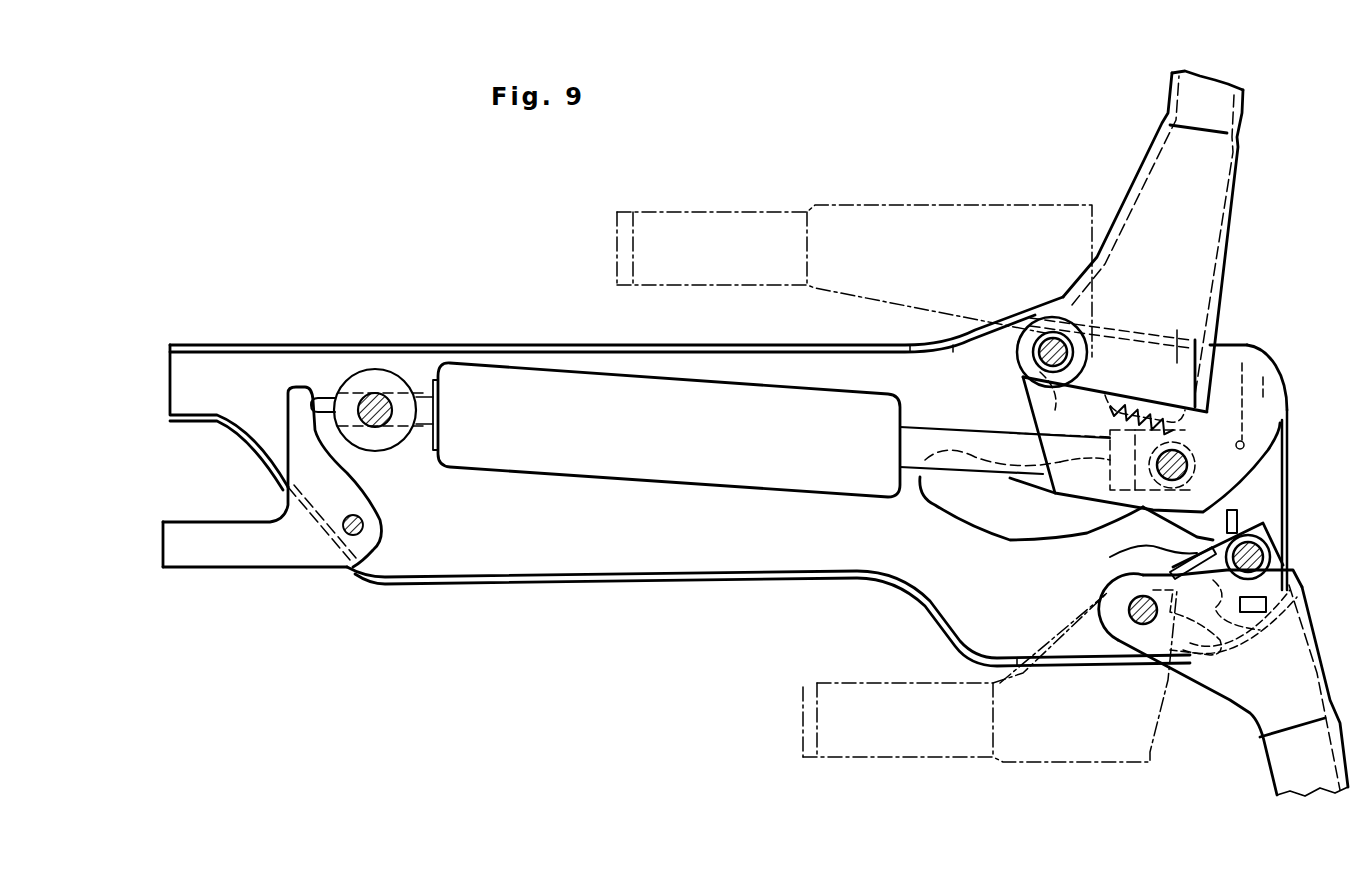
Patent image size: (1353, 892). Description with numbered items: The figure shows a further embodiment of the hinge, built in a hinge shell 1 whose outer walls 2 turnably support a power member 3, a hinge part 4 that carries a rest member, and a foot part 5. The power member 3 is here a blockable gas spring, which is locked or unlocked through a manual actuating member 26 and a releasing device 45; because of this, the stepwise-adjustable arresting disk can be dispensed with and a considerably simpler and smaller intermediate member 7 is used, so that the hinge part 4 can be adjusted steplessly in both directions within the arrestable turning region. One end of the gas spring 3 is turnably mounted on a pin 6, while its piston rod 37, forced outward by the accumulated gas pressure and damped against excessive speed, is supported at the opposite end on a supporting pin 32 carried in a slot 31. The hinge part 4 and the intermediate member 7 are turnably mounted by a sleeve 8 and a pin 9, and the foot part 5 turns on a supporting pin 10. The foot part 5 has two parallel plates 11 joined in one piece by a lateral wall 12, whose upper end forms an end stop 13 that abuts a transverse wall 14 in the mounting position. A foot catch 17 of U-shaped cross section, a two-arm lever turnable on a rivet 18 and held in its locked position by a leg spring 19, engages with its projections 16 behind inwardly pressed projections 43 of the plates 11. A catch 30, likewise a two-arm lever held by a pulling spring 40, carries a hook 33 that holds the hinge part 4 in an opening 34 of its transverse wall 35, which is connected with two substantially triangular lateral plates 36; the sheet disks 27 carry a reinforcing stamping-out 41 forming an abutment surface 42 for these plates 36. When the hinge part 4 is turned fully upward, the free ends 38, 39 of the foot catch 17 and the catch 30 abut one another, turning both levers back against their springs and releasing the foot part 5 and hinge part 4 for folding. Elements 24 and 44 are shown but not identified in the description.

The hinge shell 1 is at (700, 343).
The outer wall 2 is at (832, 362).
The power member 3 is at (513, 386).
The hinge part 4 is at (1218, 208).
The foot part 5 is at (1275, 708).
The pin 6 is at (377, 402).
The intermediate member 7 is at (1264, 408).
The sleeve 8 is at (1045, 313).
The pin 9 is at (1012, 343).
The supporting pin 10 is at (1130, 611).
The plate 11 is at (1215, 677).
The lateral wall 12 is at (1295, 600).
The end stop 13 is at (1283, 566).
The transverse wall 14 is at (1275, 552).
The projection 16 is at (1172, 676).
The foot catch 17 is at (1130, 672).
The rivet 18 is at (1275, 525).
The leg spring 19 is at (1112, 557).
The pivot 24 is at (363, 528).
The manual actuating member 26 is at (242, 542).
The quarter circular sheet disk 27 is at (1027, 457).
The catch 30 is at (1250, 344).
The slot 31 is at (1120, 512).
The supporting pin 32 is at (1167, 477).
The hook 33 is at (1237, 337).
The opening 34 is at (1178, 359).
The transverse wall 35 is at (1205, 256).
The lateral plate 36 is at (1140, 205).
The piston rod 37 is at (980, 450).
The free end 38 is at (1290, 492).
The free end 39 is at (1207, 530).
The pulling spring 40 is at (1115, 422).
The reinforcing stamping-out 41 is at (1030, 407).
The abutment surface 42 is at (1186, 387).
The inwardly extending projection 43 is at (1282, 635).
The lever 44 is at (940, 490).
The releasing device 45 is at (317, 395).